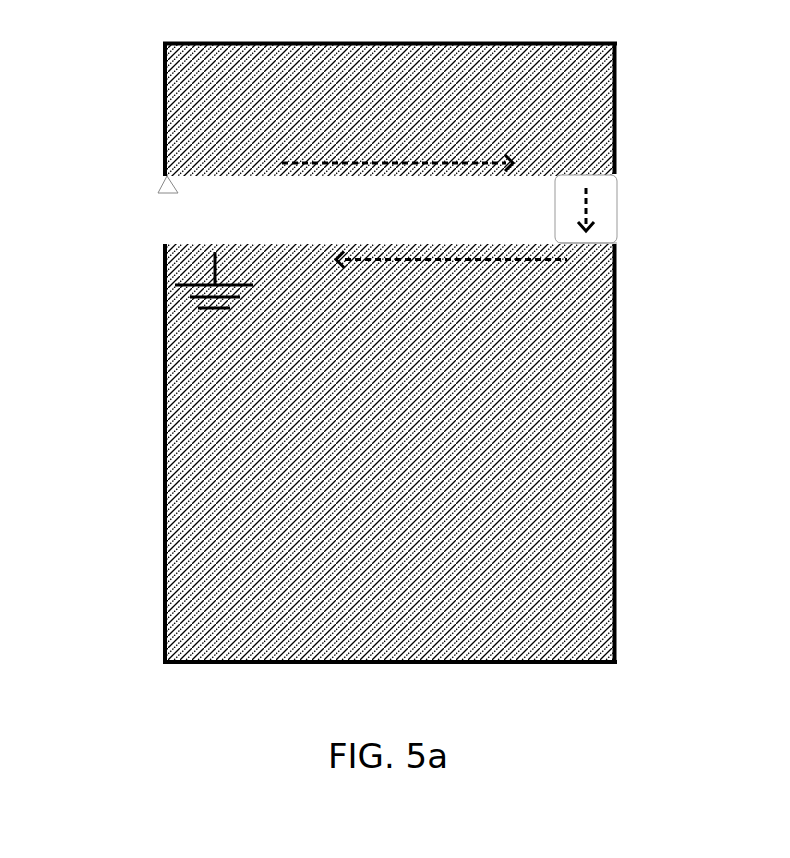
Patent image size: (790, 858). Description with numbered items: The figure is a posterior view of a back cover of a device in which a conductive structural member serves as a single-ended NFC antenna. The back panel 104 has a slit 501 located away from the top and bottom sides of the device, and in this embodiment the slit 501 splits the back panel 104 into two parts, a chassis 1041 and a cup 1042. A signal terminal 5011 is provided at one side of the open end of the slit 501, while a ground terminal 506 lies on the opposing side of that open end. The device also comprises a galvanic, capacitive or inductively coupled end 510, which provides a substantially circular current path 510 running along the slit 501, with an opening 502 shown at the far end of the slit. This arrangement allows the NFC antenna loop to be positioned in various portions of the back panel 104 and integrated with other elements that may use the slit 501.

The back panel 104 is at (344, 349).
The chassis 1041 is at (178, 468).
The cup 1042 is at (165, 49).
The slit 501 is at (180, 214).
The signal terminal 5011 is at (162, 185).
The opening 502 is at (617, 238).
The ground terminal 506 is at (214, 297).
The coupled end 510 is at (513, 170).